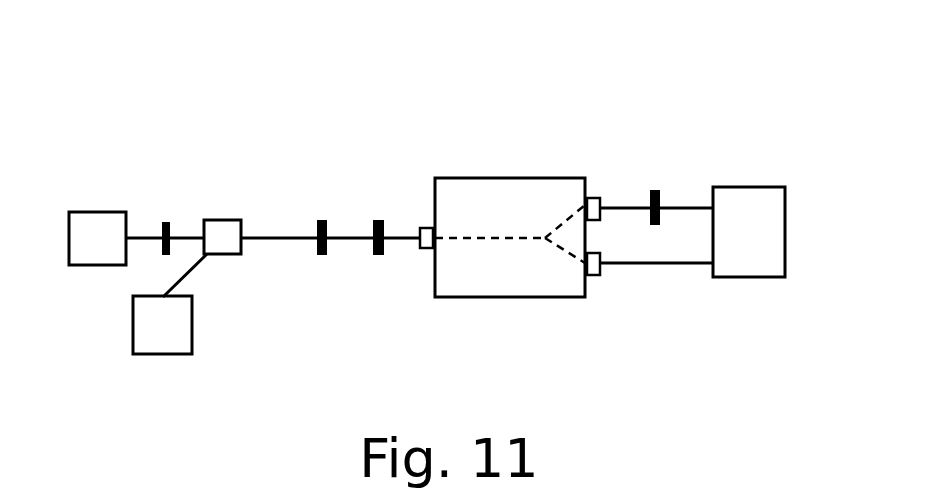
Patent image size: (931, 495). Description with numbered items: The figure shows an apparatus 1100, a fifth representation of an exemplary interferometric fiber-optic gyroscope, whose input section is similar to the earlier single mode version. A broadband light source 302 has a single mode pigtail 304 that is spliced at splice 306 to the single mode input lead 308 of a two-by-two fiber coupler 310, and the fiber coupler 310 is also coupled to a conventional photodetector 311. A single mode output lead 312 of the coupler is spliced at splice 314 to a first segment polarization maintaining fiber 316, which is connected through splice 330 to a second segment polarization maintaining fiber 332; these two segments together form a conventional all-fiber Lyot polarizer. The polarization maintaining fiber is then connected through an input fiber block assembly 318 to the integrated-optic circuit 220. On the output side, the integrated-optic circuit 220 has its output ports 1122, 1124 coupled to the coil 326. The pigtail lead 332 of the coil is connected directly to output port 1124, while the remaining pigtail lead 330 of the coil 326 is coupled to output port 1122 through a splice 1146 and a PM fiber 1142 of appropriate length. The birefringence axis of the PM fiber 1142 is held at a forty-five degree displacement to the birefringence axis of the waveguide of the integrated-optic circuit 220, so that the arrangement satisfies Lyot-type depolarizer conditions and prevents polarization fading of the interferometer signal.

The apparatus 1100 is at (181, 76).
The broadband light source 302 is at (93, 212).
The pigtail 304 is at (149, 242).
The splice 306 is at (165, 222).
The single mode input lead 308 is at (186, 238).
The fiber coupler 310 is at (225, 220).
The photodetector 311 is at (162, 354).
The output lead 312 is at (275, 238).
The splice 314 is at (321, 220).
The first segment polarization maintaining fiber 316 is at (349, 238).
The input fiber block assembly 318 is at (424, 228).
The splice 330 is at (378, 220).
The second segment polarization maintaining fiber 332 is at (405, 240).
The integrated-optic circuit 220 is at (507, 297).
The output port 1122 is at (600, 198).
The output port 1124 is at (598, 278).
The PM fiber 1142 is at (622, 208).
The splice 1146 is at (652, 190).
The coil 326 is at (745, 278).